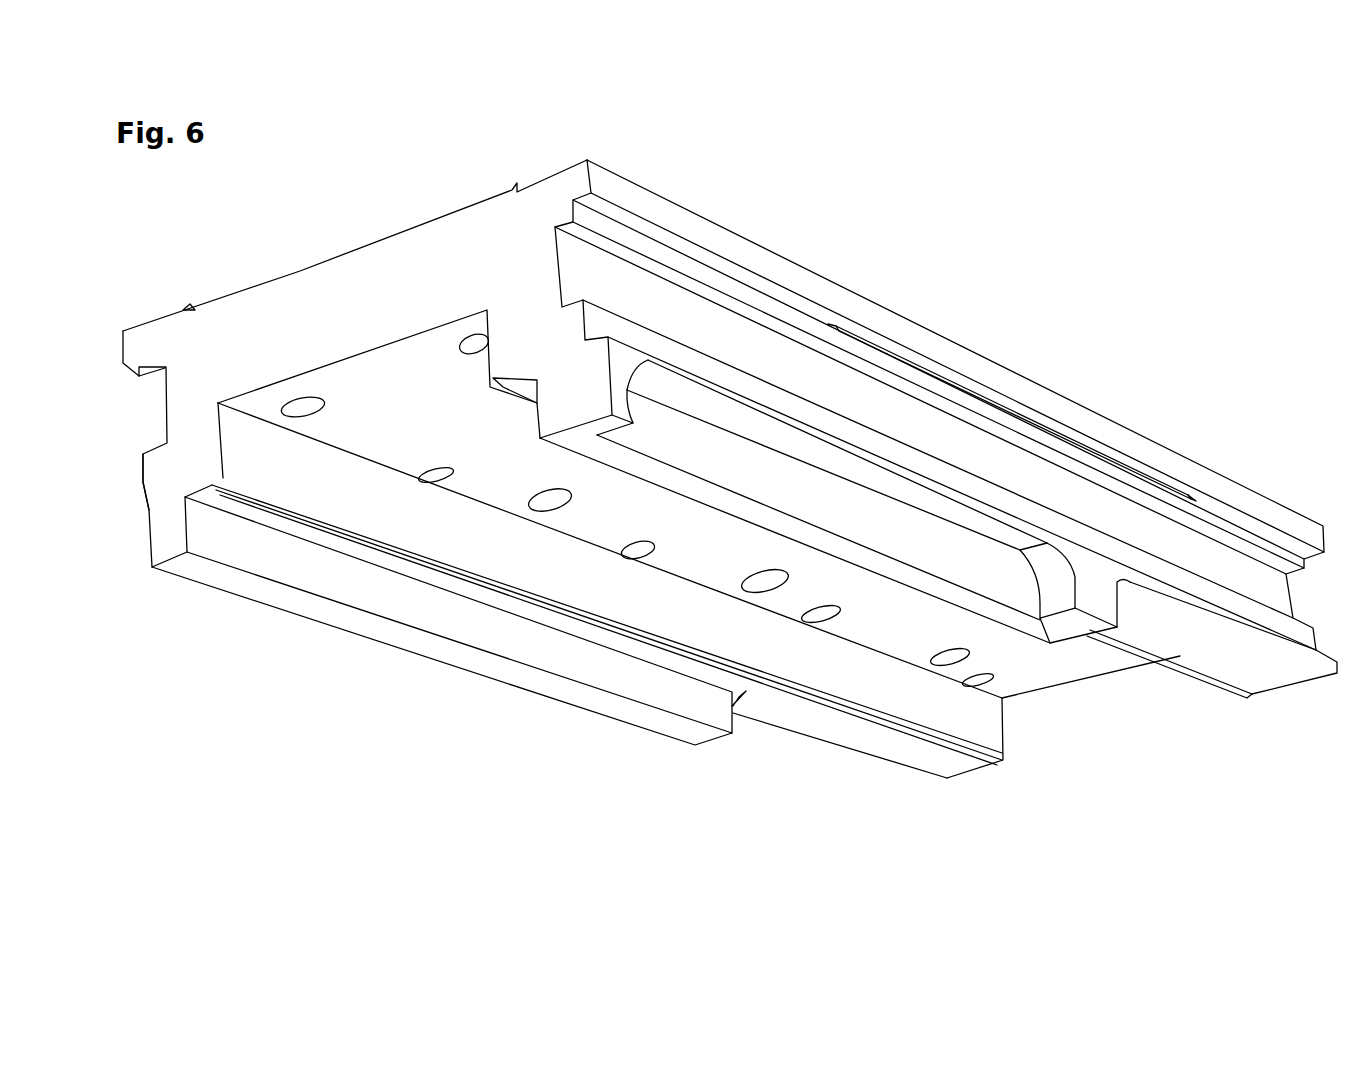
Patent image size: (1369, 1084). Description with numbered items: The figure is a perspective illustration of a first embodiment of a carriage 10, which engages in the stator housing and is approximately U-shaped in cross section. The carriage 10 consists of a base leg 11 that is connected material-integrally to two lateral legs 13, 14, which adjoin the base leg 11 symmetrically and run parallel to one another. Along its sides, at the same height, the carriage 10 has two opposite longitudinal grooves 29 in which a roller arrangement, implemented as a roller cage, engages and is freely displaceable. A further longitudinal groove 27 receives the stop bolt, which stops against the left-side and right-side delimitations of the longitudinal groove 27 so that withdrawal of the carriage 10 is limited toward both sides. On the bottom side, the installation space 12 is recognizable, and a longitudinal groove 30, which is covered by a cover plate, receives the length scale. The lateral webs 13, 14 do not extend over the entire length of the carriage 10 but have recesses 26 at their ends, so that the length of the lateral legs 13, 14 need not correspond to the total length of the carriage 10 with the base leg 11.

The carriage 10 is at (988, 343).
The base leg 11 is at (336, 283).
The installation space 12 is at (693, 540).
The lateral leg 13 is at (618, 462).
The lateral leg 14 is at (300, 613).
The recess 26 is at (873, 740).
The longitudinal groove 27 is at (948, 540).
The longitudinal groove 29 is at (692, 316).
The longitudinal groove 30 is at (150, 513).